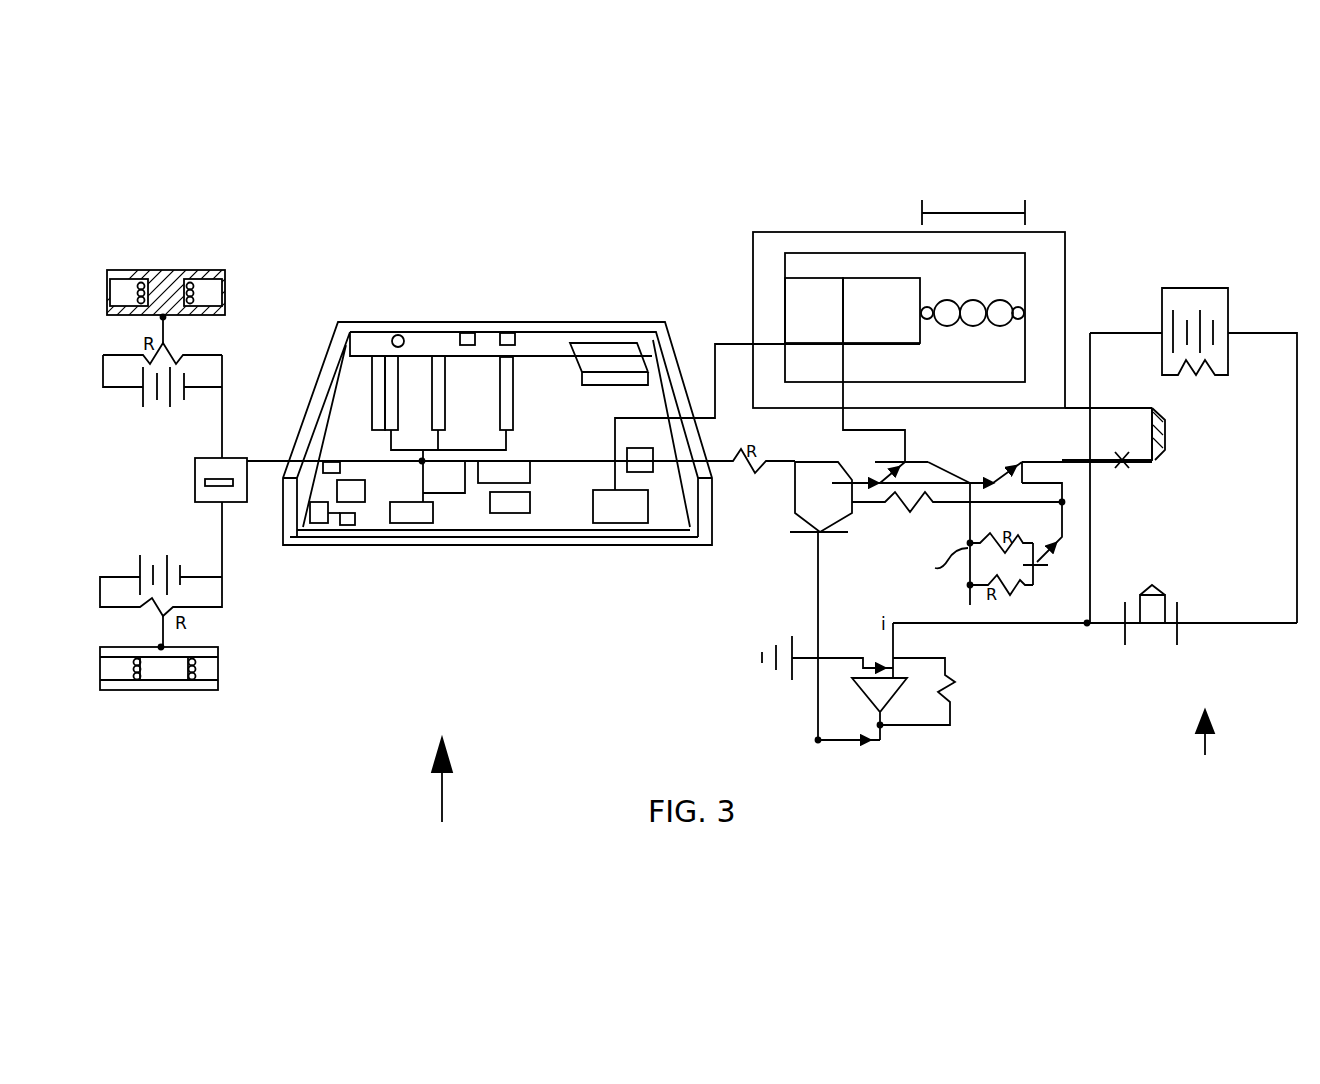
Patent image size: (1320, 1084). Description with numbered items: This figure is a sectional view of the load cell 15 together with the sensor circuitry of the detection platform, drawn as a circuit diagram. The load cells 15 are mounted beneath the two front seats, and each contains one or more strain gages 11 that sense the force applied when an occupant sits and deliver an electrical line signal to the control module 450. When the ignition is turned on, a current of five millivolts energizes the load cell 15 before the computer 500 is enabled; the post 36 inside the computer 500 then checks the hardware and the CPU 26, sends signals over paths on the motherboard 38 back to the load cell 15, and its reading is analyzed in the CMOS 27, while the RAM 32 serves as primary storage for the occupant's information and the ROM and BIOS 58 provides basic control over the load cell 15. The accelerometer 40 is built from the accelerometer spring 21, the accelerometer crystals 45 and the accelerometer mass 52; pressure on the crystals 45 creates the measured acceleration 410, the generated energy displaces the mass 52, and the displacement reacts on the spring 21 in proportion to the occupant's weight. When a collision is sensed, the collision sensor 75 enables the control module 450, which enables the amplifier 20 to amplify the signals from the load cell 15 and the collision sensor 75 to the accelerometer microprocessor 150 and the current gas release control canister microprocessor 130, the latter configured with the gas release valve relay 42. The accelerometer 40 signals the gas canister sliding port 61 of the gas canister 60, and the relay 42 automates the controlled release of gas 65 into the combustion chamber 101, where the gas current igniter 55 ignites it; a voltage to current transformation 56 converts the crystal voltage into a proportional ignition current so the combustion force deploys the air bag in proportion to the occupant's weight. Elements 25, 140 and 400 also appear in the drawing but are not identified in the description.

The load cell 15 is at (167, 270).
The strain gages 11 is at (193, 294).
The valve 25 is at (195, 473).
The amplifier 20 is at (472, 497).
The motherboard 38 is at (523, 527).
The post 36 is at (470, 333).
The accelerometer microprocessor 150 is at (372, 390).
The connector bar 140 is at (446, 417).
The current gas release control canister microprocessor 130 is at (500, 368).
The control module 450 is at (520, 472).
The CPU 26 is at (433, 511).
The ROM and BIOS 58 is at (365, 490).
The CMOS 27 is at (348, 525).
The RAM 32 is at (530, 502).
The gas release valve relay 42 is at (642, 467).
The accelerometer 40 is at (770, 232).
The accelerometer crystals 45 is at (790, 314).
The accelerometer mass 52 is at (887, 338).
The accelerometer spring 21 is at (948, 300).
The measured acceleration 410 is at (957, 212).
The voltage to current transformation 56 is at (910, 728).
The gas canister 60 is at (1108, 408).
The controlled release of gas 65 is at (1167, 433).
The gas canister sliding port 61 is at (1122, 470).
The collision sensor 75 is at (1193, 287).
The combustion chamber 101 is at (1197, 552).
The gas current igniter 55 is at (1148, 625).
The mechanical section 400 is at (1211, 757).
The computer 500 is at (440, 808).